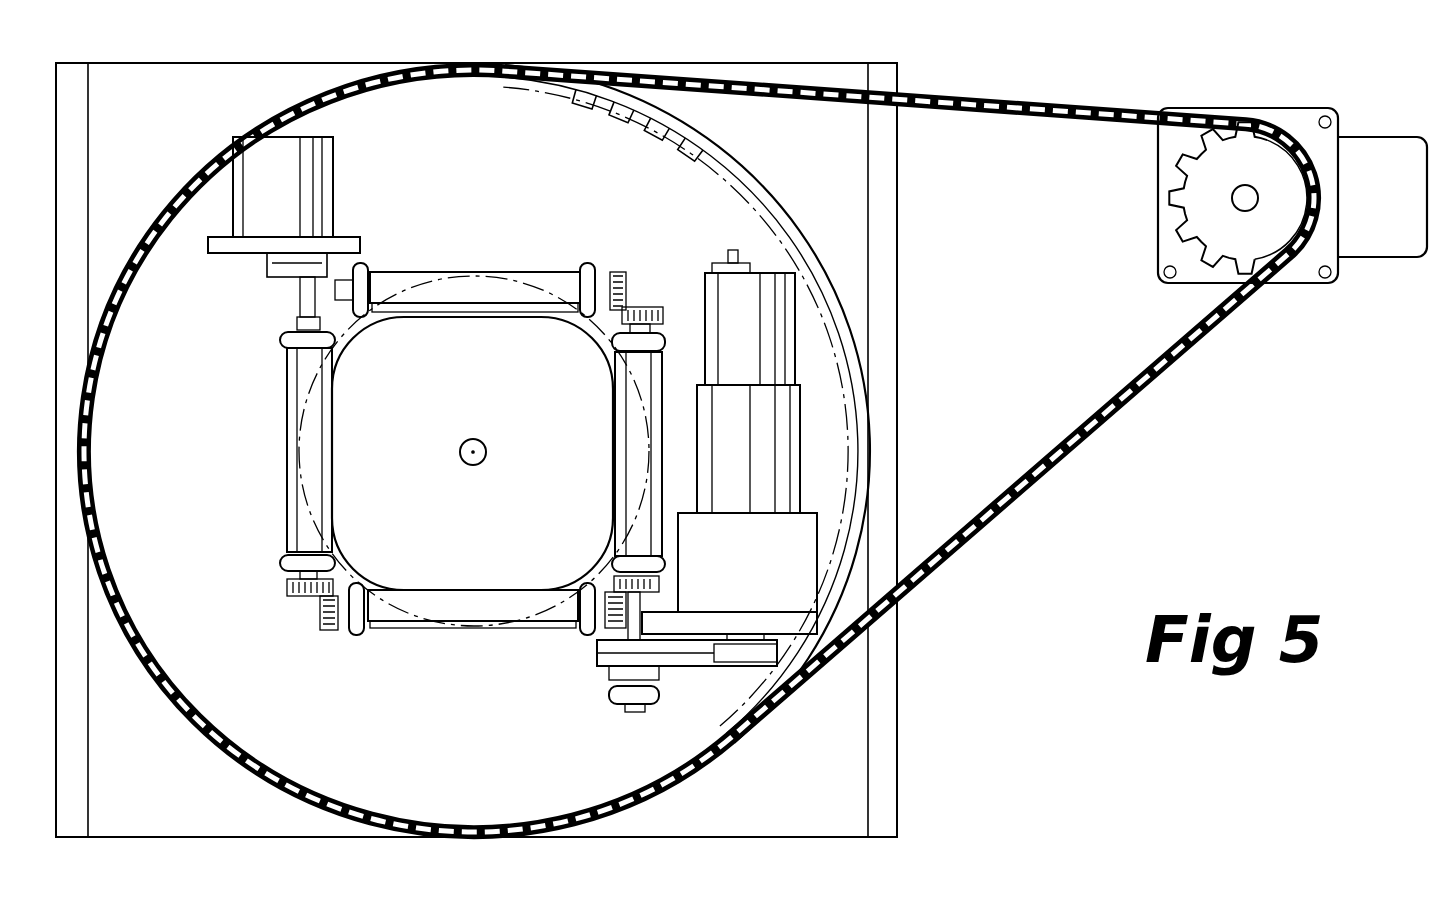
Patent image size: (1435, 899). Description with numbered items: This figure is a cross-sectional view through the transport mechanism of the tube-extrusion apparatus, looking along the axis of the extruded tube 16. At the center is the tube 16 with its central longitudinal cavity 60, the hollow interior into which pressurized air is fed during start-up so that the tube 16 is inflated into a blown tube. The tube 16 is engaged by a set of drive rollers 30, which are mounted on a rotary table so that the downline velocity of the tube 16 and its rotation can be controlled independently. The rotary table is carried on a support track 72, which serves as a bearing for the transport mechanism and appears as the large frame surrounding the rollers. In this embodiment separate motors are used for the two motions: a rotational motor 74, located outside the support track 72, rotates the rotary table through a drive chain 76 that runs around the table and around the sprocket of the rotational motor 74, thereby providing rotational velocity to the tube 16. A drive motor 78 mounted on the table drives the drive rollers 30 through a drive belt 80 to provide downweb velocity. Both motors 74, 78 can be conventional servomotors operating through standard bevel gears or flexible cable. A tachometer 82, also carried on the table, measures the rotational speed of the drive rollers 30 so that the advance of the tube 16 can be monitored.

The tube 16 is at (360, 553).
The drive rollers 30 is at (558, 270).
The central longitudinal cavity 60 is at (160, 80).
The support track 72 is at (884, 752).
The rotational motor 74 is at (1298, 272).
The drive chain 76 is at (1155, 366).
The drive motor 78 is at (708, 278).
The drive belt 80 is at (688, 655).
The tachometer 82 is at (333, 147).